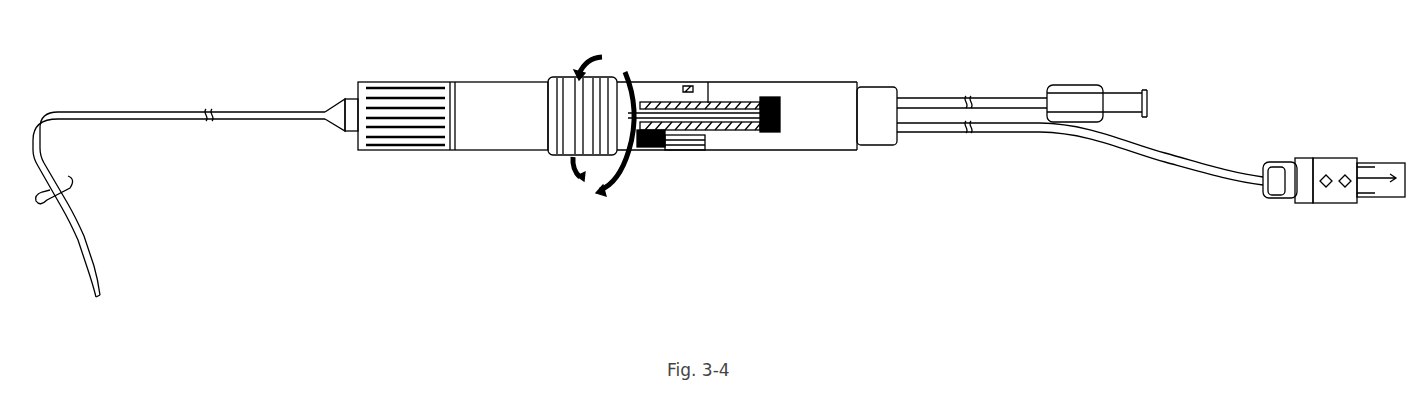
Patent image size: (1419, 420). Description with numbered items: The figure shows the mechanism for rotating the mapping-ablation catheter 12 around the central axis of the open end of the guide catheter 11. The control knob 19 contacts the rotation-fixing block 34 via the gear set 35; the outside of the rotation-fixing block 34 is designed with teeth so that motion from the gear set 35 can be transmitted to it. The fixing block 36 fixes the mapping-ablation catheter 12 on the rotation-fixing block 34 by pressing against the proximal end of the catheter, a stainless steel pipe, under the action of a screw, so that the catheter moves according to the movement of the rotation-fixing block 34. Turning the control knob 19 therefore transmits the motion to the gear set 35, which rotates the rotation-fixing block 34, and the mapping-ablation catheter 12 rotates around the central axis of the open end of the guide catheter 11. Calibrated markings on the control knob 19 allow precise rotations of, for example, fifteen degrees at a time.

The guide catheter 11 is at (142, 115).
The mapping-ablation catheter 12 is at (82, 233).
The control knob 19 is at (602, 82).
The rotation-fixing block 34 is at (725, 127).
The gear set 35 is at (667, 137).
The fixing block 36 is at (775, 132).